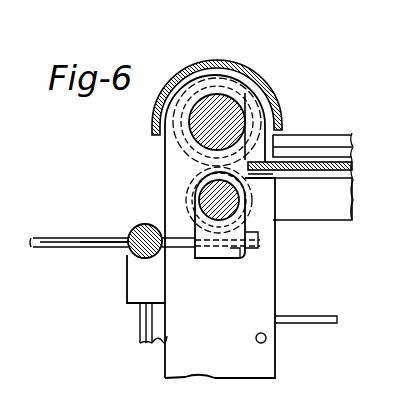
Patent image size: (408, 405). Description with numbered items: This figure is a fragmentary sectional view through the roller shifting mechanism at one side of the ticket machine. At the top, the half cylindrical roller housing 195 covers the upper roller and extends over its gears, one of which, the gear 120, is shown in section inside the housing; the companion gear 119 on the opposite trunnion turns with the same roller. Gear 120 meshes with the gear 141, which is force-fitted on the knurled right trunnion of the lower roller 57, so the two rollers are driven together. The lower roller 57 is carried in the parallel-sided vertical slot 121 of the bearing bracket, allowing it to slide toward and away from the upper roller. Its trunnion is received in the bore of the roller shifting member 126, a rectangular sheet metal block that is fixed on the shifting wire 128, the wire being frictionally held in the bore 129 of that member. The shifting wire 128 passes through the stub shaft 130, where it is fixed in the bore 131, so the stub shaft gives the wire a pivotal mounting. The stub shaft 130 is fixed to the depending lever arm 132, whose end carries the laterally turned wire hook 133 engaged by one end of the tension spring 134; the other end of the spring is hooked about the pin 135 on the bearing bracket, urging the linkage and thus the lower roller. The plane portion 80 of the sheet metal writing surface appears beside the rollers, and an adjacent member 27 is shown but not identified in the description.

The half cylindrical roller housing 195 is at (157, 110).
The gear 120 is at (260, 107).
The guide rail 27 is at (312, 132).
The plane portion 80 is at (348, 160).
The lower roller 57 is at (200, 192).
The stub shaft 130 is at (150, 224).
The gear 141 is at (262, 198).
The vertical slot 121 is at (257, 238).
The shifting wire 128 is at (80, 248).
The bore 131 is at (115, 252).
The lever arm 132 is at (135, 288).
The wire hook 133 is at (140, 318).
The tension spring 134 is at (160, 341).
The roller shifting member 126 is at (212, 262).
The bore 129 is at (240, 250).
The pin 135 is at (267, 338).
The gear 119 is at (262, 360).